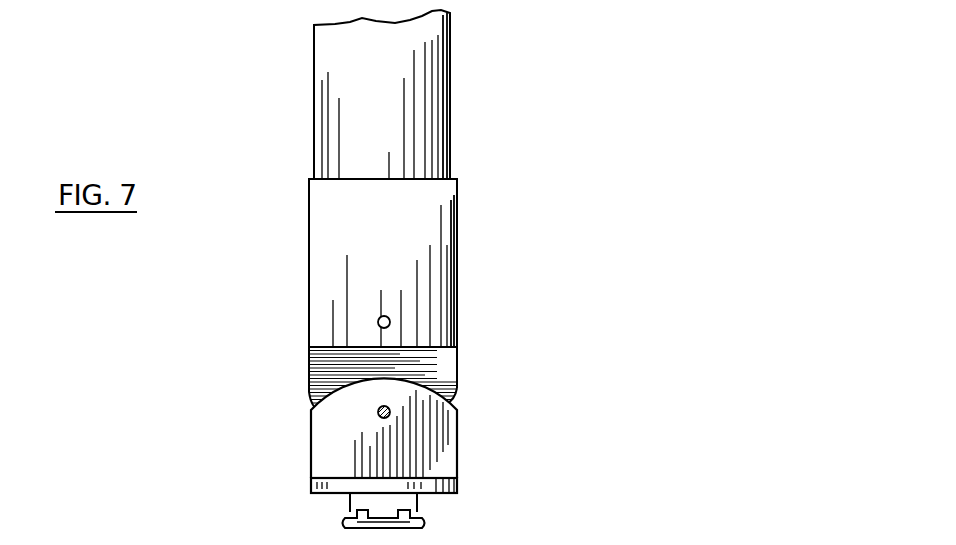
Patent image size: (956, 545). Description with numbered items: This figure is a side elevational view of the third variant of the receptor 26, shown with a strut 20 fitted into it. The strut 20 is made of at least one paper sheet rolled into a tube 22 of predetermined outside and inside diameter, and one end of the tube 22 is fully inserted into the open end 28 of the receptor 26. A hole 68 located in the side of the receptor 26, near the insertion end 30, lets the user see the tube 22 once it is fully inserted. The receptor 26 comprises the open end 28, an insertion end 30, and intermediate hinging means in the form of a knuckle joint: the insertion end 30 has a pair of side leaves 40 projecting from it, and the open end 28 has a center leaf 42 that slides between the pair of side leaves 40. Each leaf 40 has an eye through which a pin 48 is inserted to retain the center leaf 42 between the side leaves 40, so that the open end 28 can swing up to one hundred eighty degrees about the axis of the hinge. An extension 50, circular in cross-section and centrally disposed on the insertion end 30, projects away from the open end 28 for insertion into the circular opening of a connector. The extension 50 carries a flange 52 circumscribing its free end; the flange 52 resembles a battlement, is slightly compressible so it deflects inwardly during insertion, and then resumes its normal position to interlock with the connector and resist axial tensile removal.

The strut 20 is at (480, 94).
The tube 22 is at (428, 100).
The receptor 26 is at (272, 332).
The open end 28 is at (430, 206).
The insertion end 30 is at (333, 477).
The side leaves 40 is at (432, 443).
The center leaf 42 is at (330, 374).
The pin 48 is at (390, 408).
The extension 50 is at (362, 502).
The flange 52 is at (422, 520).
The hole 68 is at (390, 320).